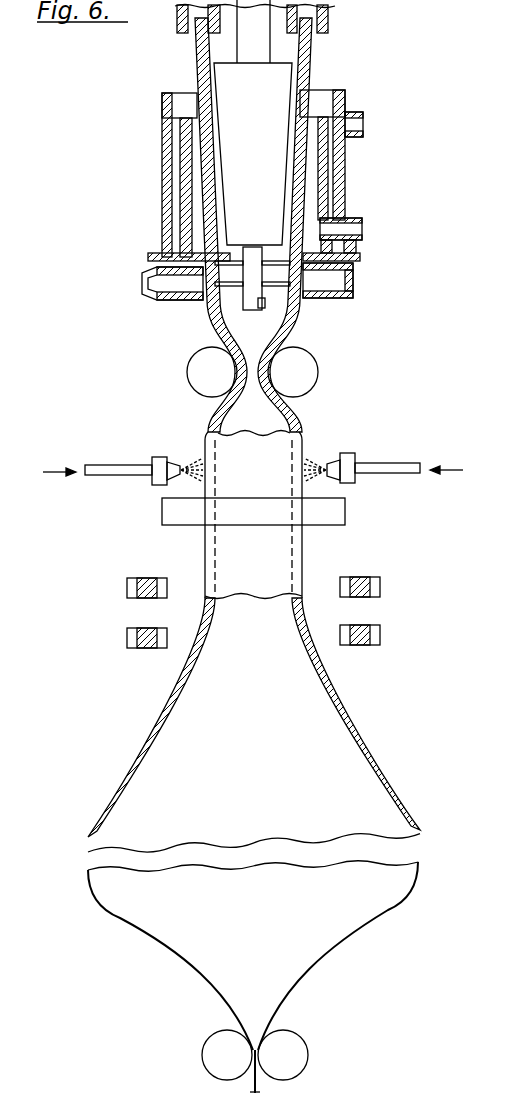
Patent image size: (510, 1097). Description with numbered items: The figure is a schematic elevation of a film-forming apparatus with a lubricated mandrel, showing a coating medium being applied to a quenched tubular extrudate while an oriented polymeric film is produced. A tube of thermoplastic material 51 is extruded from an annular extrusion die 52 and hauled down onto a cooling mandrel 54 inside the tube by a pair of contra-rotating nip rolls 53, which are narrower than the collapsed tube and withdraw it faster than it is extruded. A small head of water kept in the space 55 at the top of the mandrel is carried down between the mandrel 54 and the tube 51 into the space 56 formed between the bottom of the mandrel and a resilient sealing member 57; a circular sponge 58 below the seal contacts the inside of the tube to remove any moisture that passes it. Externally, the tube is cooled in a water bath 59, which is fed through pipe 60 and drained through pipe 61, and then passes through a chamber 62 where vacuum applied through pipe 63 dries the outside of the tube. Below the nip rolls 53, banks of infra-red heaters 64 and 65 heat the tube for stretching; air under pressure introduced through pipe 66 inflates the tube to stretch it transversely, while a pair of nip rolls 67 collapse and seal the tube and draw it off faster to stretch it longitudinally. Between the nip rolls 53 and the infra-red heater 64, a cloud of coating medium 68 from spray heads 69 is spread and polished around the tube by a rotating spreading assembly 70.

The tube of thermoplastic material 51 is at (308, 55).
The annular extrusion die 52 is at (327, 12).
The contra-rotating nip rolls 53 is at (312, 367).
The cooling mandrel 54 is at (283, 80).
The space at the top of the mandrel 55 is at (222, 53).
The space between the bottom of the mandrel and the sealing member 56 is at (230, 253).
The resilient sealing member 57 is at (233, 262).
The circular sponge 58 is at (232, 287).
The water bath 59 is at (347, 152).
The pipe 60 is at (360, 227).
The pipe 61 is at (363, 125).
The chamber 62 is at (340, 282).
The pipe 63 is at (143, 280).
The infra-red heater 64 is at (370, 577).
The infra-red heater 65 is at (127, 637).
The pipe 66 is at (264, 300).
The nip rolls 67 is at (307, 1063).
The cloud of coating medium 68 is at (315, 455).
The spray heads 69 is at (353, 452).
The rotating spreading assembly 70 is at (168, 515).